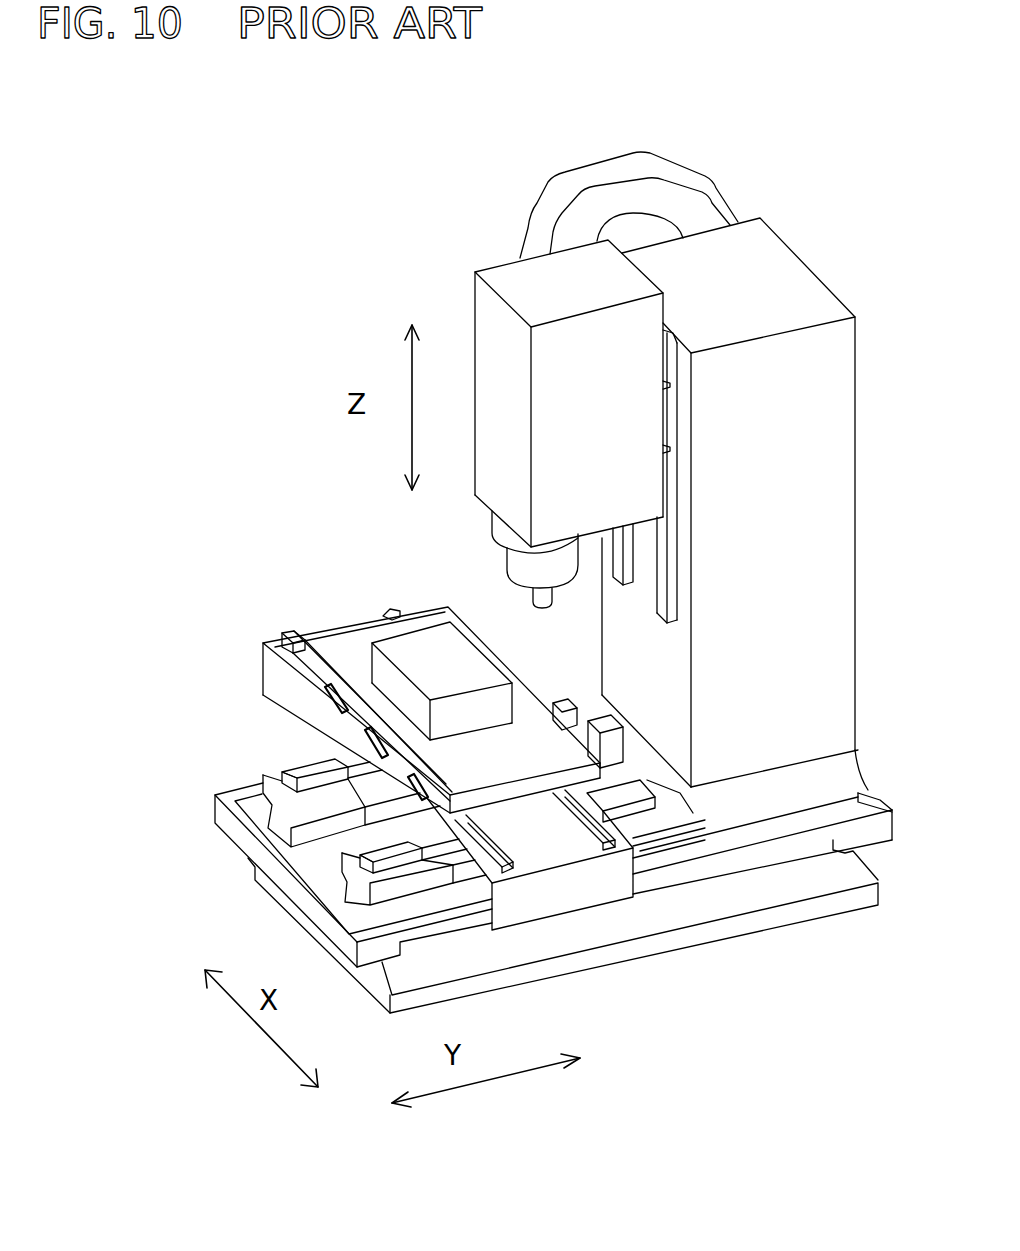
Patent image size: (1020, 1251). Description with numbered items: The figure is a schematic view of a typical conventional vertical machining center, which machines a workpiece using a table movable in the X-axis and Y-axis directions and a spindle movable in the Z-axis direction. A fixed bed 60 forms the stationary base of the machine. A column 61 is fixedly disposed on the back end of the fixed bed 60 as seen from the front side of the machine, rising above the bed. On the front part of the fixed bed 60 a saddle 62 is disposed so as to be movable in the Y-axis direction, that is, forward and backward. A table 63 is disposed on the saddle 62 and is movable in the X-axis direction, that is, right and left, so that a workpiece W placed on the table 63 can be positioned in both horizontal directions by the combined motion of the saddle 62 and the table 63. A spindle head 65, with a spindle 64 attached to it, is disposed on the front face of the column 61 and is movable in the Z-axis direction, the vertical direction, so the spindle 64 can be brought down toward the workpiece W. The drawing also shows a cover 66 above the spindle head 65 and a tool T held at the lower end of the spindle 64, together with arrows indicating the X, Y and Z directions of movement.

The fixed bed 60 is at (703, 937).
The column 61 is at (778, 253).
The saddle 62 is at (565, 900).
The table 63 is at (346, 640).
The spindle 64 is at (513, 562).
The spindle head 65 is at (520, 258).
The spindle head feed unit cover 66 is at (622, 153).
The workpiece W is at (440, 640).
The tool T is at (533, 605).